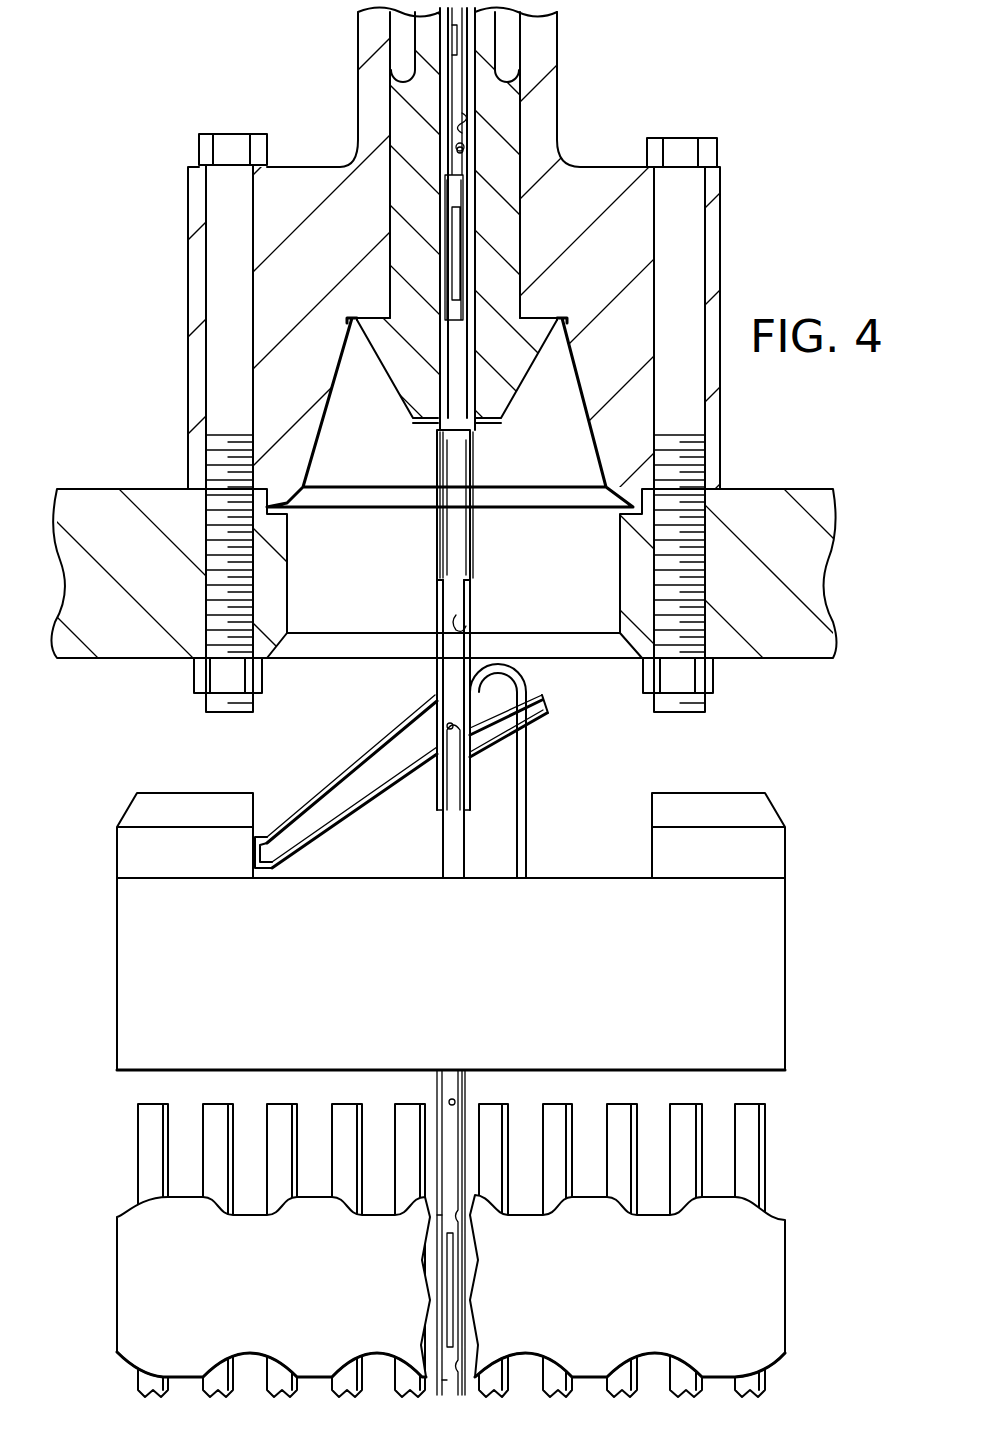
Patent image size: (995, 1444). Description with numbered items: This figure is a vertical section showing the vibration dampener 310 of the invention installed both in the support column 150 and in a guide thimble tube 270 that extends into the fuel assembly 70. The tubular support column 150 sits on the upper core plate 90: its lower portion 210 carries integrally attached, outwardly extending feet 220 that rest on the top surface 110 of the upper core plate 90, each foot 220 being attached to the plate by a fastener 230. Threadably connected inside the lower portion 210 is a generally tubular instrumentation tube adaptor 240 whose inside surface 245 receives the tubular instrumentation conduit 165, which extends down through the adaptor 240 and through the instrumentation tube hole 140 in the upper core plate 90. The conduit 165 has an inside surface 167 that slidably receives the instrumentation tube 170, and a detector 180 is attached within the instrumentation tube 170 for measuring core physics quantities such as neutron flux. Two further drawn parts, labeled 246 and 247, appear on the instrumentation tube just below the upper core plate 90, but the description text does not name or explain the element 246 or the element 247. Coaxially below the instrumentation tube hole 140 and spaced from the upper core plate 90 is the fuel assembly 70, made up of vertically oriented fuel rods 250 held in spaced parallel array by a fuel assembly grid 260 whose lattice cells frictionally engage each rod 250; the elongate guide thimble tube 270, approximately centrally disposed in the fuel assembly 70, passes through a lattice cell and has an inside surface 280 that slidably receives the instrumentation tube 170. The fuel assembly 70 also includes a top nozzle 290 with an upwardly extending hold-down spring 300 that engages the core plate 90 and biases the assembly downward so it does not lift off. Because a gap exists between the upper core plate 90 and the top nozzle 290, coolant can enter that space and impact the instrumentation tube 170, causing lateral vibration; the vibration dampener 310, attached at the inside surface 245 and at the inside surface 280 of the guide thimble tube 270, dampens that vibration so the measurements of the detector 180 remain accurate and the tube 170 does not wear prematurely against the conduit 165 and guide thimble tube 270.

The fuel assembly 70 is at (788, 1262).
The upper core plate 90 is at (833, 569).
The top surface 110 is at (749, 488).
The instrumentation tube hole 140 is at (624, 541).
The support column 150 is at (553, 40).
The instrumentation conduit 165 is at (443, 114).
The inside surface 167 is at (452, 146).
The instrumentation tube 170 is at (468, 78).
The detector 180 is at (452, 40).
The lower portion 210 is at (557, 118).
The feet 220 is at (722, 252).
The fastener 230 is at (237, 133).
The instrumentation tube adaptor 240 is at (418, 288).
The inside surface 245 is at (468, 120).
The coupling sleeve 246 is at (440, 622).
The retainer 247 is at (470, 628).
The fuel rods 250 is at (148, 1165).
The fuel assembly grid 260 is at (118, 1258).
The guide thimble tube 270 is at (433, 1213).
The inside surface 280 is at (447, 1379).
The top nozzle 290 is at (116, 848).
The hold-down spring 300 is at (372, 745).
The vibration dampener 310 is at (470, 188).